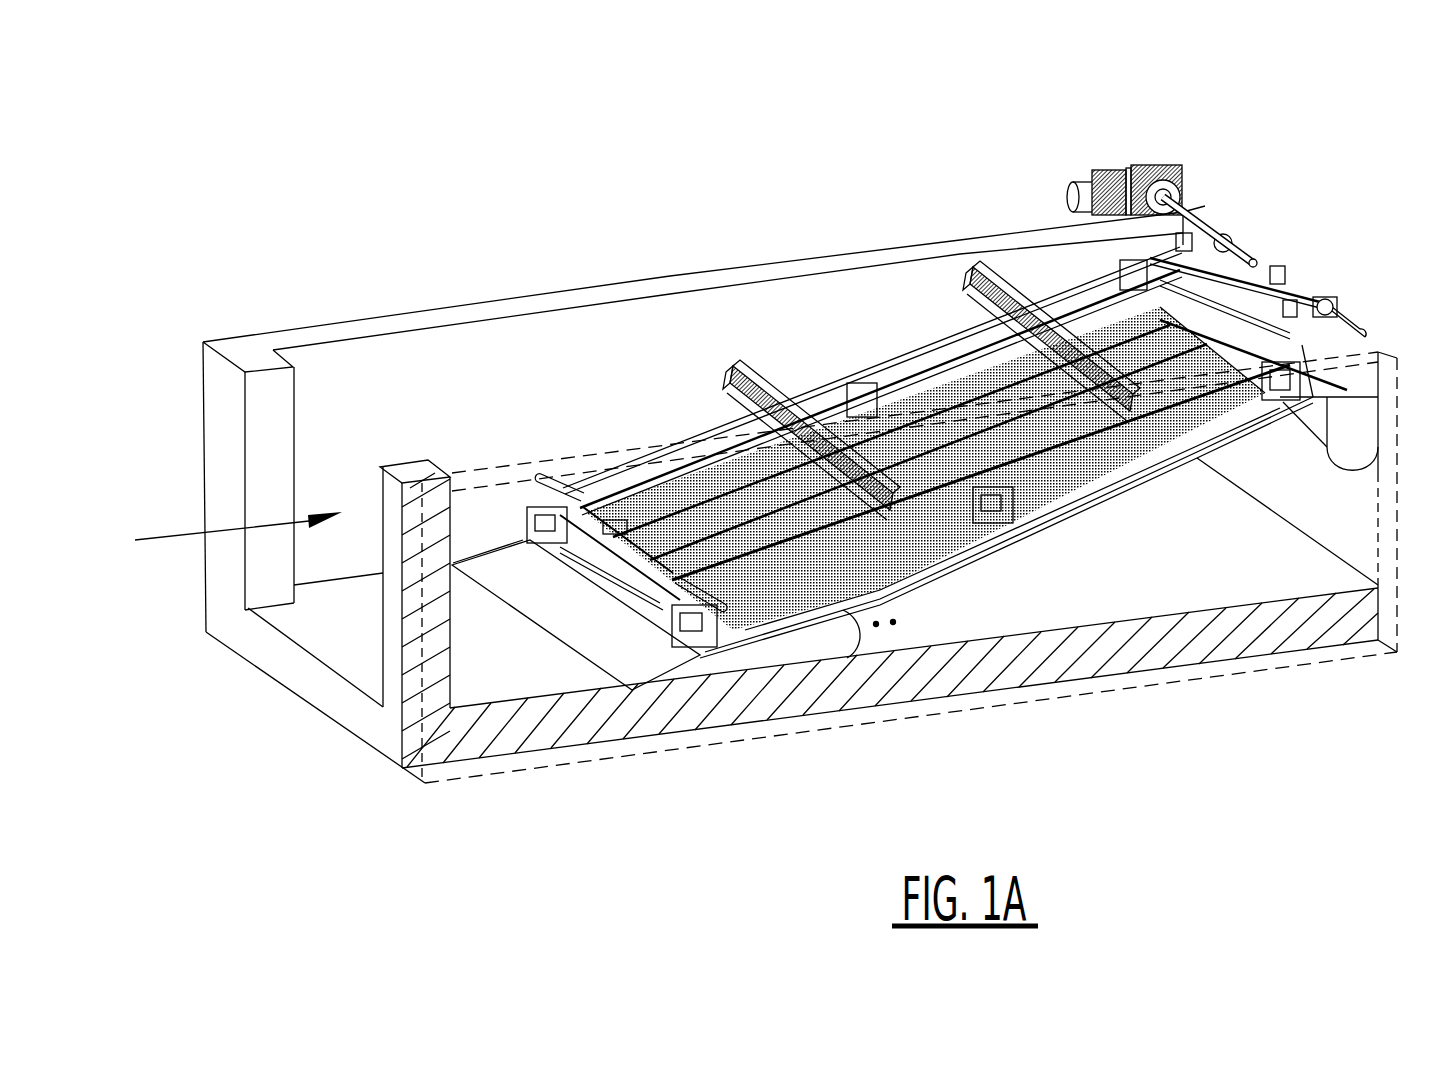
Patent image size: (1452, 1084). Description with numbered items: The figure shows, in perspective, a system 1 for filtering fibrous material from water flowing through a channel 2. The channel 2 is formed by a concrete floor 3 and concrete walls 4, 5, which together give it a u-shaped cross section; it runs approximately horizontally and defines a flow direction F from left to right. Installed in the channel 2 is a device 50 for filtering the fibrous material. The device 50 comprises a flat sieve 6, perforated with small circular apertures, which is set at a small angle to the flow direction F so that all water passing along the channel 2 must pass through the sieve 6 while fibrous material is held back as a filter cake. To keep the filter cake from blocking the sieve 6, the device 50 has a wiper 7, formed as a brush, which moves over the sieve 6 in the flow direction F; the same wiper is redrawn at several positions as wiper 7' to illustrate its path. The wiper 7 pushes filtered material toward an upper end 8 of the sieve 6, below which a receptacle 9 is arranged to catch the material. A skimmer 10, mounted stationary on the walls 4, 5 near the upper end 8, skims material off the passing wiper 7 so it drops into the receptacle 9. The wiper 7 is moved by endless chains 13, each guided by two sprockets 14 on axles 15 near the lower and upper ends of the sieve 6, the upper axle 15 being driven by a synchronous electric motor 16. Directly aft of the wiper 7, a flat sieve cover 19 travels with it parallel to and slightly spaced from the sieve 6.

The system for filtering fibrous material 1 is at (285, 156).
The channel 2 is at (586, 232).
The concrete floor 3 is at (355, 640).
The concrete wall 4 is at (448, 350).
The concrete wall 5 is at (1295, 570).
The sieve 6 is at (860, 567).
The wiper 7 is at (941, 522).
The wiper (redrawn position) 7' is at (991, 354).
The upper end of the sieve 8 is at (1288, 392).
The receptacle 9 is at (1363, 395).
The skimmer 10 is at (1330, 380).
The endless chain 13 is at (1182, 245).
The sprocket 14 is at (1224, 243).
The axle 15 is at (1278, 275).
The synchronous electric motor 16 is at (1103, 172).
The sieve cover 19 is at (603, 585).
The device for filtering fibrous material 50 is at (876, 292).
The flow direction F is at (238, 513).